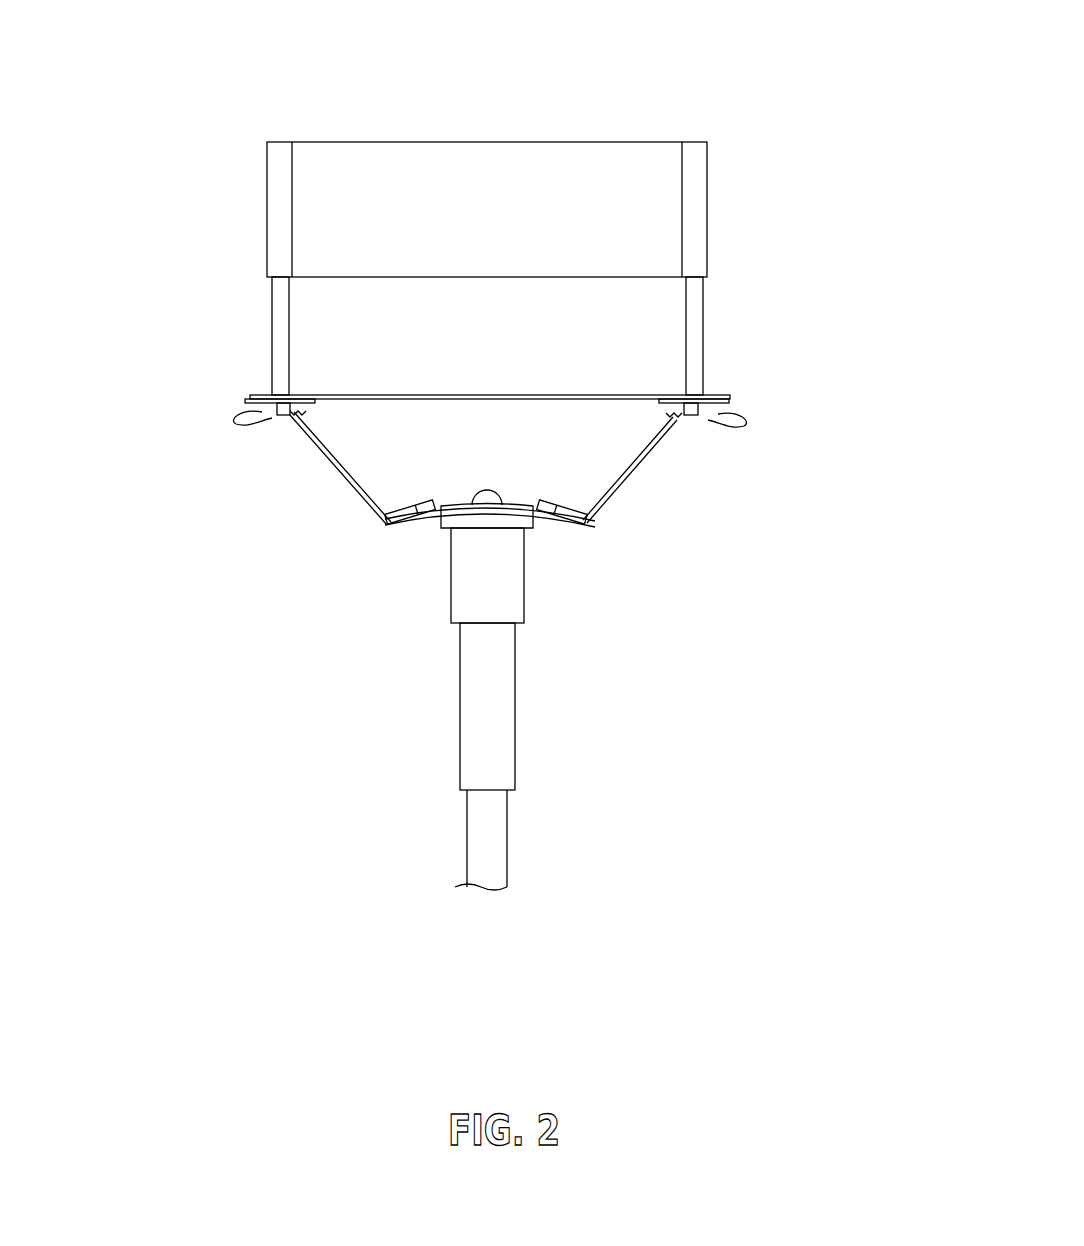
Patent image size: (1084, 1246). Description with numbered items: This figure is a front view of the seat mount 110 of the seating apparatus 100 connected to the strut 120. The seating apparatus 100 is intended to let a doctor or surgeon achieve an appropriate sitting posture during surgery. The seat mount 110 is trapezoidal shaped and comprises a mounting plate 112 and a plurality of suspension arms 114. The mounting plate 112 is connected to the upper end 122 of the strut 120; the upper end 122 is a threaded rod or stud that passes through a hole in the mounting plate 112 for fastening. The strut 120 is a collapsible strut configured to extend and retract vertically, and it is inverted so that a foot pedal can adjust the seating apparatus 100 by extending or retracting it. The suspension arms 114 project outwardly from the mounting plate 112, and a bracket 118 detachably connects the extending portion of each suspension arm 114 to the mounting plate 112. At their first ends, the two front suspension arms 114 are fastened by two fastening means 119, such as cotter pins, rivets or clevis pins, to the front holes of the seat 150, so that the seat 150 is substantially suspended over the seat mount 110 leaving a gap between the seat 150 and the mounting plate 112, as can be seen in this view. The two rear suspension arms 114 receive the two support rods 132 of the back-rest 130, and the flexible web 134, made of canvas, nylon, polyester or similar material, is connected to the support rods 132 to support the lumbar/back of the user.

The seating apparatus 100 is at (712, 110).
The seat mount 110 is at (652, 470).
The mounting plate 112 is at (575, 523).
The suspension arms 114 is at (330, 462).
The bracket 118 is at (385, 525).
The fastening means 119 is at (275, 412).
The strut 120 is at (475, 690).
The upper end 122 is at (482, 506).
The back-rest 130 is at (650, 224).
The support rods 132 is at (285, 318).
The flexible web 134 is at (430, 186).
The seat 150 is at (635, 393).